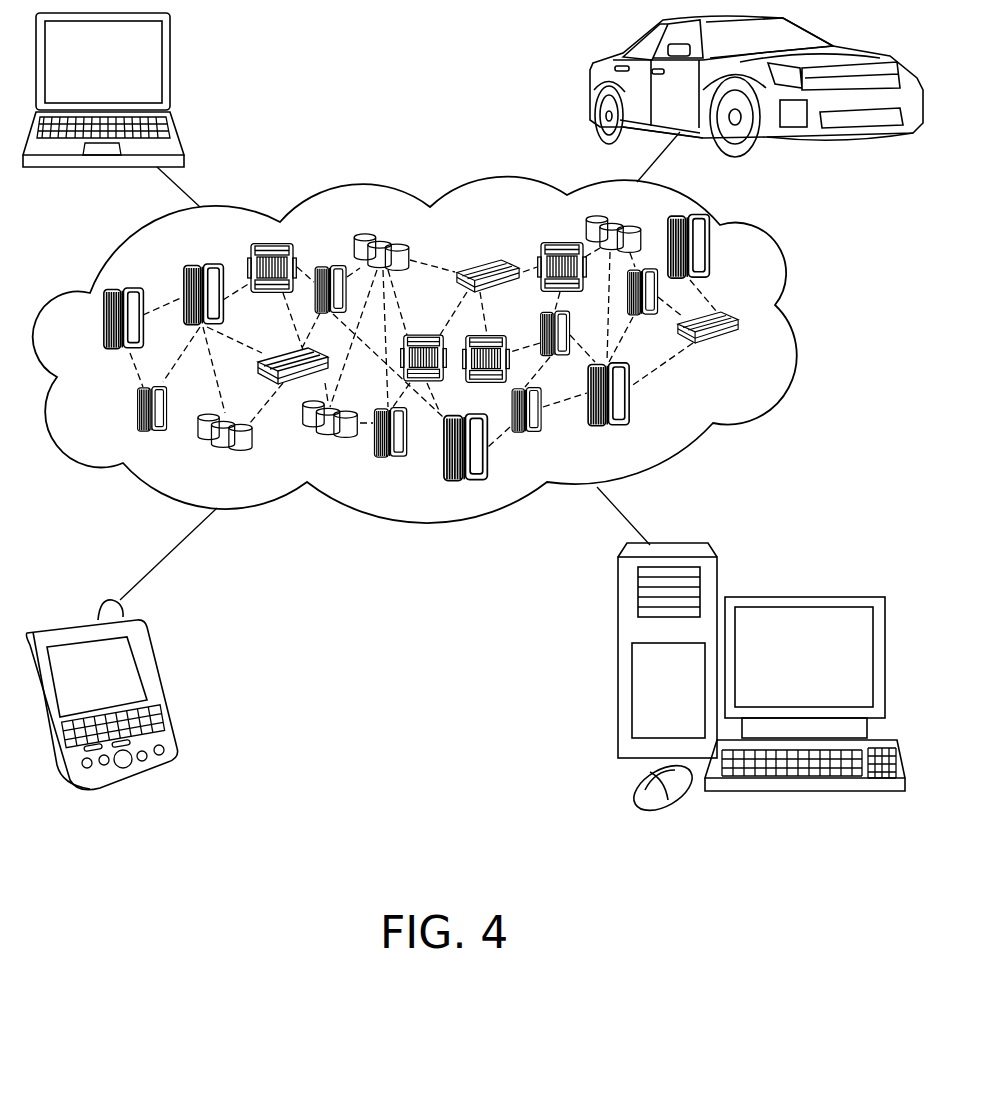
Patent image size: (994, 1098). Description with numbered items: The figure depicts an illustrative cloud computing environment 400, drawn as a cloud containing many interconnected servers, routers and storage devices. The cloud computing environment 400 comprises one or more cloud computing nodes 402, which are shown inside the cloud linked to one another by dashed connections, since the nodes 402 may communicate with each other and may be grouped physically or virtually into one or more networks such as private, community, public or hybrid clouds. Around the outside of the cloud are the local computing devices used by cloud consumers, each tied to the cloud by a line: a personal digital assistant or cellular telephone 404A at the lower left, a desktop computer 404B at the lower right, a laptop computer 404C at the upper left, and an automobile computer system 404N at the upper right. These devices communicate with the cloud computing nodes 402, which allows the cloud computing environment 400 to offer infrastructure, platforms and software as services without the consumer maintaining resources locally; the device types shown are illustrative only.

The cloud computing environment 400 is at (782, 306).
The cloud computing nodes 402 is at (745, 352).
The personal digital assistant (PDA) or cellular telephone 404A is at (147, 657).
The desktop computer 404B is at (790, 597).
The laptop computer 404C is at (170, 47).
The automobile computer system 404N is at (592, 88).